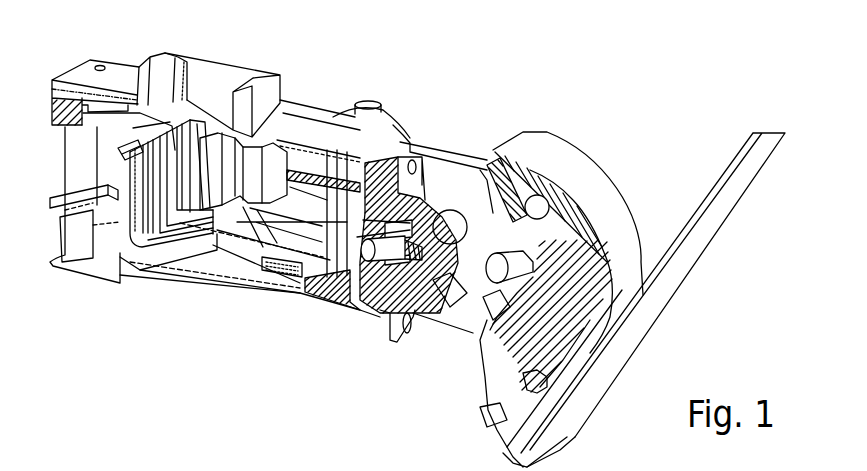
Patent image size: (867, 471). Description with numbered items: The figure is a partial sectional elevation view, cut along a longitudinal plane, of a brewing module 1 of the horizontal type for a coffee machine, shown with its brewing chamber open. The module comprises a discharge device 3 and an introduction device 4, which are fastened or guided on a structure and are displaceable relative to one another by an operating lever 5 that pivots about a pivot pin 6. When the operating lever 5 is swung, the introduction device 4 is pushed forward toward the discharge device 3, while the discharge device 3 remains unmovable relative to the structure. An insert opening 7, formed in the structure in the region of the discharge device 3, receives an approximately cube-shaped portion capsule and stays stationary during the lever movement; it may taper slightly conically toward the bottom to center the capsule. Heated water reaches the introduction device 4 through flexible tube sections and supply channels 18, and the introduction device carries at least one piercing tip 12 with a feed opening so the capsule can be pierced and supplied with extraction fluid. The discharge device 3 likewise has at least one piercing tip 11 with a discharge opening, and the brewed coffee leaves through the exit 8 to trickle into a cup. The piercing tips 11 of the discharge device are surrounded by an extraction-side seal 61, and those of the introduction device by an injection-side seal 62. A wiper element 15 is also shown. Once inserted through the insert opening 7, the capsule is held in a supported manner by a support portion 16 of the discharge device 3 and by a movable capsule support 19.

The brewing module 1 is at (397, 98).
The discharge device 3 is at (205, 258).
The introduction device 4 is at (222, 258).
The operating lever 5 is at (717, 180).
The pivot pin 6 is at (497, 272).
The insert opening 7 is at (197, 80).
The exit 8 is at (72, 198).
The piercing tip 11 is at (122, 235).
The piercing tip 12 is at (333, 275).
The wiper element 15 is at (277, 143).
The support portion 16 is at (155, 250).
The supply channels 18 is at (397, 257).
The movable capsule support 19 is at (211, 262).
The extraction-side seal 61 is at (130, 147).
The injection-side seal 62 is at (385, 170).